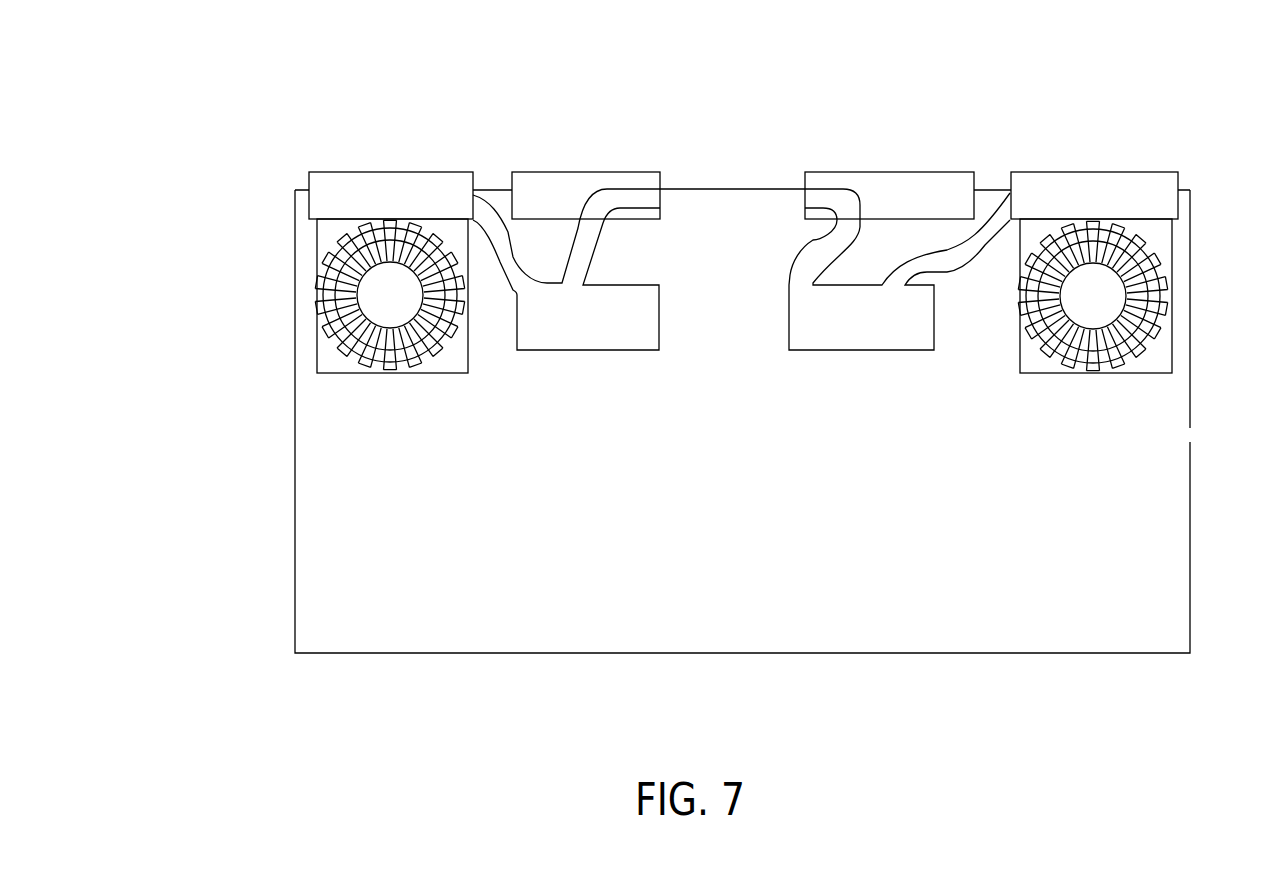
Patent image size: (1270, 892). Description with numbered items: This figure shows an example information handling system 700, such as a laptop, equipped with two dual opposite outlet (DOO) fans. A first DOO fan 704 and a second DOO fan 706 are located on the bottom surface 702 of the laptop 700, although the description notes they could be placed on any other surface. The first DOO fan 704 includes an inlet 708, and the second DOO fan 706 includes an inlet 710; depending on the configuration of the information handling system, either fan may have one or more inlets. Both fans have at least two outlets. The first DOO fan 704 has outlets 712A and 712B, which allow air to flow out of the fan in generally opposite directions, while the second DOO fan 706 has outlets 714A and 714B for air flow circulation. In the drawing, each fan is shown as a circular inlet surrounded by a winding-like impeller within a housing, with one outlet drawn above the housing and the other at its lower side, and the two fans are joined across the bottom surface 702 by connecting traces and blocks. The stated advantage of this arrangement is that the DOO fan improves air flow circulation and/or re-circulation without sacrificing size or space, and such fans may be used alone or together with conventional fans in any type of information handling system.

The information handling system 700 is at (212, 138).
The bottom surface 702 is at (710, 633).
The first DOO fan 704 is at (373, 305).
The second DOO fan 706 is at (1090, 298).
The inlet 708 is at (330, 297).
The inlet 710 is at (1140, 283).
The outlet 712A is at (347, 217).
The outlet 712B is at (358, 375).
The outlet 714A is at (1072, 218).
The outlet 714B is at (1123, 373).